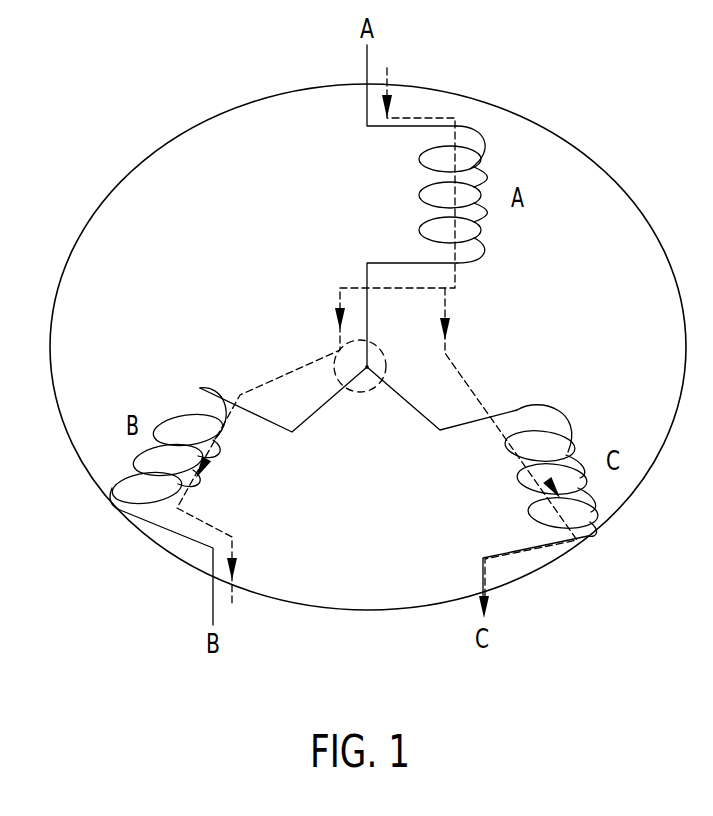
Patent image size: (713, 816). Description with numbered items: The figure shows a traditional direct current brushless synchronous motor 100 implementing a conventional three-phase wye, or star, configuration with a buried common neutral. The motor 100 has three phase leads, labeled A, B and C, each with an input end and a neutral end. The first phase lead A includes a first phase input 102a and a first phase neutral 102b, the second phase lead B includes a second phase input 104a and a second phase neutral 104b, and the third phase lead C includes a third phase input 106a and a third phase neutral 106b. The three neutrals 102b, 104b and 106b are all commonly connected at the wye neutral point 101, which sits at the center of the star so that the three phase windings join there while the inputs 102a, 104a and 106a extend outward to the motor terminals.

The DC brushless synchronous motor 100 is at (90, 161).
The wye neutral point 101 is at (369, 418).
The first phase input 102a is at (366, 74).
The first phase neutral 102b is at (366, 283).
The second phase input 104a is at (212, 604).
The second phase neutral 104b is at (309, 420).
The third phase input 106a is at (532, 548).
The third phase neutral 106b is at (432, 424).